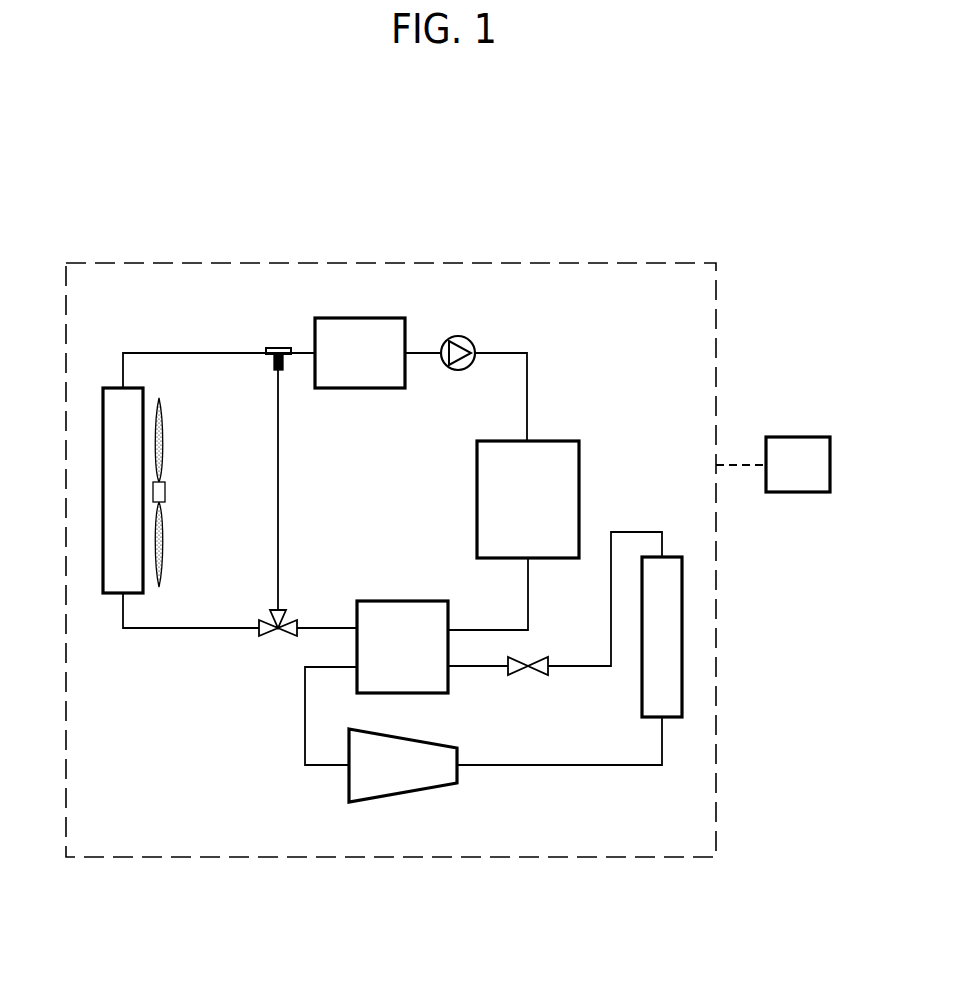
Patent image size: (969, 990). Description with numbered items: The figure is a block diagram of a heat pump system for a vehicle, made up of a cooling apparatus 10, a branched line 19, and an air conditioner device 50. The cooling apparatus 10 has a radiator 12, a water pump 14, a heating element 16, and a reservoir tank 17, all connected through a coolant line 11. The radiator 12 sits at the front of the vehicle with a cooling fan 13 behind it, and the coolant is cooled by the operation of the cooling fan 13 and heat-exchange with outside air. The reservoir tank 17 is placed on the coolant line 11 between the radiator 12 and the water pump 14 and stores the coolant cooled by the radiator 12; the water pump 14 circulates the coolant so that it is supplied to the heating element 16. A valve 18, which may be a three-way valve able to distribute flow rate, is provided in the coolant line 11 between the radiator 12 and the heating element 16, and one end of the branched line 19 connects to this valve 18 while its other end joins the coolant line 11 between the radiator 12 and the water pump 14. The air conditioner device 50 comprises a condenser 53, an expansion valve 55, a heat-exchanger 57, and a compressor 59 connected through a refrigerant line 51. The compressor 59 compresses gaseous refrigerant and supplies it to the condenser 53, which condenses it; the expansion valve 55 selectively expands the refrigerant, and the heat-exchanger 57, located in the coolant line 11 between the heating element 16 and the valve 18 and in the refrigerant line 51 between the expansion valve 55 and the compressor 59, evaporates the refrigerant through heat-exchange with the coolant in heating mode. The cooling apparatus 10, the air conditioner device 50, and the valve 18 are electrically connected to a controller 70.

The cooling apparatus 10 is at (539, 343).
The coolant line 11 is at (190, 351).
The radiator 12 is at (113, 594).
The cooling fan 13 is at (165, 447).
The water pump 14 is at (464, 337).
The heating element 16 is at (477, 494).
The reservoir tank 17 is at (365, 389).
The valve 18 is at (256, 636).
The branched line 19 is at (279, 493).
The air conditioner device 50 is at (287, 749).
The refrigerant line 51 is at (637, 531).
The condenser 53 is at (672, 718).
The expansion valve 55 is at (520, 673).
The heat-exchanger 57 is at (402, 600).
The compressor 59 is at (430, 792).
The controller 70 is at (798, 436).